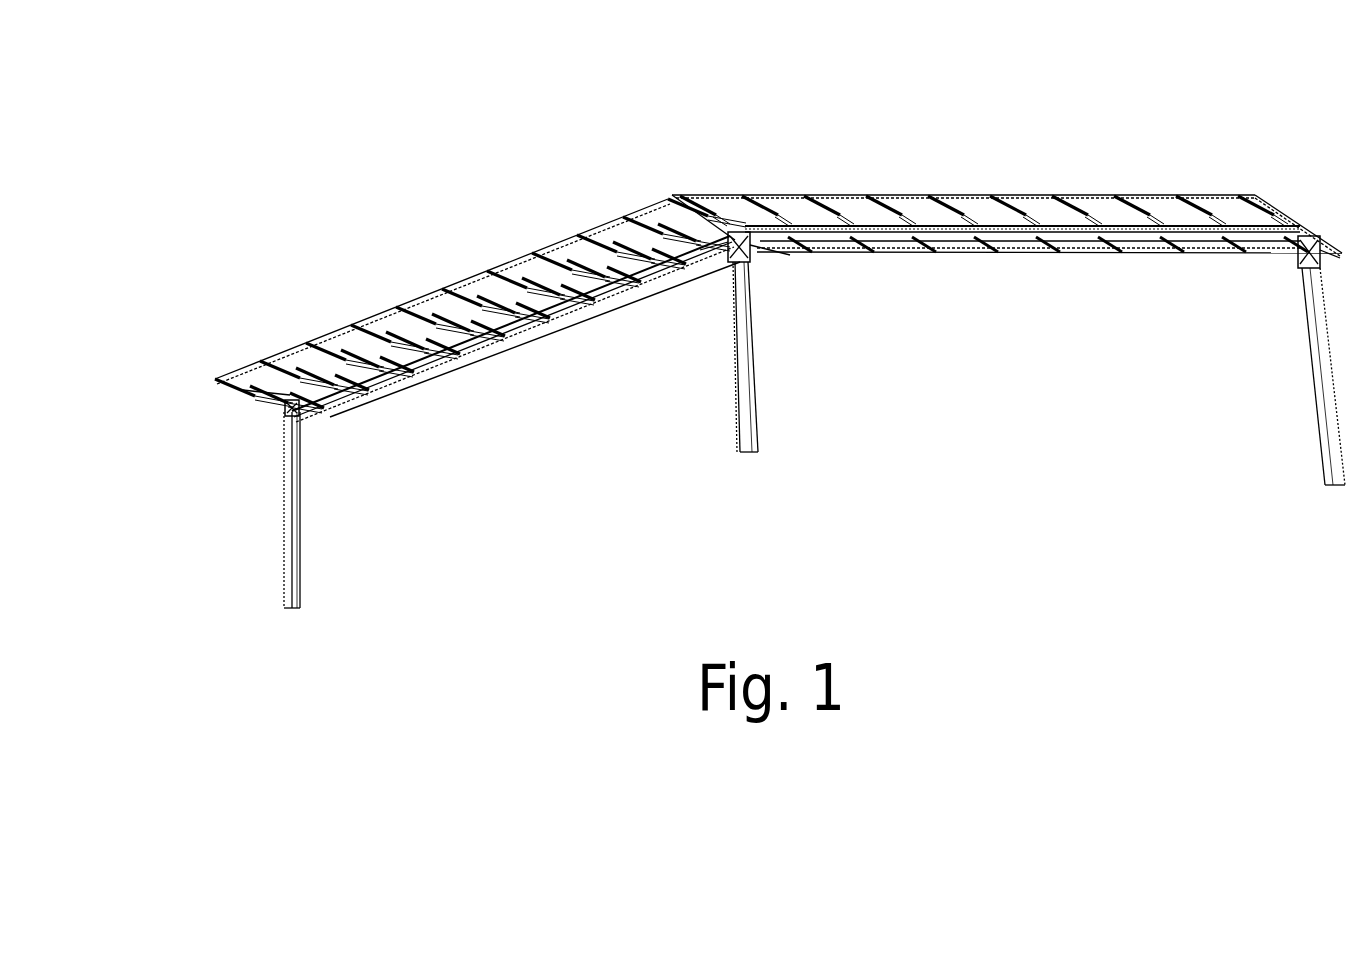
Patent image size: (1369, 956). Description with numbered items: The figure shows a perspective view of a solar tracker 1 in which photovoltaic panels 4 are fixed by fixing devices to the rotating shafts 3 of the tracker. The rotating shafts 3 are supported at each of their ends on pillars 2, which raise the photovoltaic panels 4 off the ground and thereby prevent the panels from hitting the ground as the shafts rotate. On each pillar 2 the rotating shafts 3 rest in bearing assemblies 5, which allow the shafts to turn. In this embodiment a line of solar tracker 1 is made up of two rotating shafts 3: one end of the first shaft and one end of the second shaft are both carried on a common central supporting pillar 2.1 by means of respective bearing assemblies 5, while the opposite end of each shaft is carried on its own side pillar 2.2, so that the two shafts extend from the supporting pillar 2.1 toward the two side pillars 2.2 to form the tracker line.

The solar tracker 1 is at (403, 206).
The pillars 2 is at (1281, 445).
The supporting pillar 2.1 is at (742, 352).
The side pillar 2.2 is at (290, 557).
The rotating shafts 3 is at (1005, 233).
The photovoltaic panels 4 is at (1040, 208).
The bearing assemblies 5 is at (250, 408).